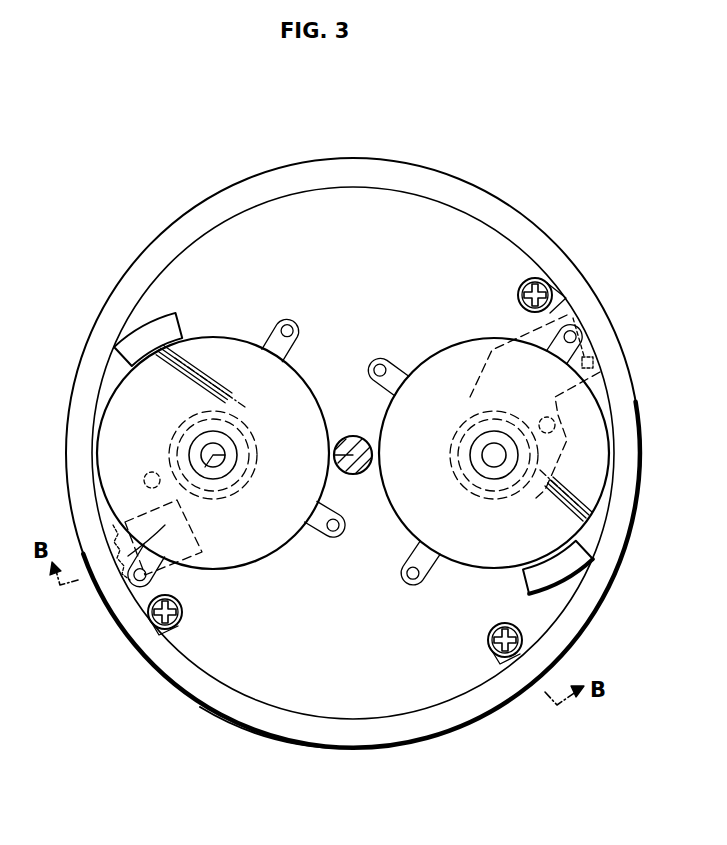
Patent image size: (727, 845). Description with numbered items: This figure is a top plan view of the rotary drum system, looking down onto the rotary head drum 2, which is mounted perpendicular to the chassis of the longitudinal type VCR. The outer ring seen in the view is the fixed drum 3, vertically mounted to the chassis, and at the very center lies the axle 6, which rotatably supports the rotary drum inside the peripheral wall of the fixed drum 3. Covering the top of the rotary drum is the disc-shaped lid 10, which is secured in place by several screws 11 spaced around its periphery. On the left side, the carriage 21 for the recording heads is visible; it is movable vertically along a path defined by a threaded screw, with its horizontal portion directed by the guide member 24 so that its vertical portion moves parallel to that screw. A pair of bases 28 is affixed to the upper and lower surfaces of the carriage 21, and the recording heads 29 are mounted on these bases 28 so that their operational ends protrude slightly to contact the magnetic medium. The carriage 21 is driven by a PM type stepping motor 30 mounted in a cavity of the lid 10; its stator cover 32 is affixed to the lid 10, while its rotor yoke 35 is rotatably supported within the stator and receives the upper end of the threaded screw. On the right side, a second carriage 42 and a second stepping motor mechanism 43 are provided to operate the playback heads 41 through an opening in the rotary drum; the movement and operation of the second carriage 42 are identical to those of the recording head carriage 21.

The rotary head drum 2 is at (622, 585).
The fixed drum 3 is at (320, 748).
The axle 6 is at (352, 438).
The disc-shaped lid 10 is at (420, 700).
The screws 11 is at (552, 292).
The carriage 21 is at (168, 447).
The guide member 24 is at (144, 478).
The bases 28 is at (192, 548).
The recording heads 29 is at (135, 553).
The stepping motor 30 is at (106, 368).
The stator cover 32 is at (125, 407).
The rotor yoke 35 is at (218, 470).
The playback heads 41 is at (596, 358).
The second carriage 42 is at (560, 430).
The second stepping motor mechanism 43 is at (594, 558).